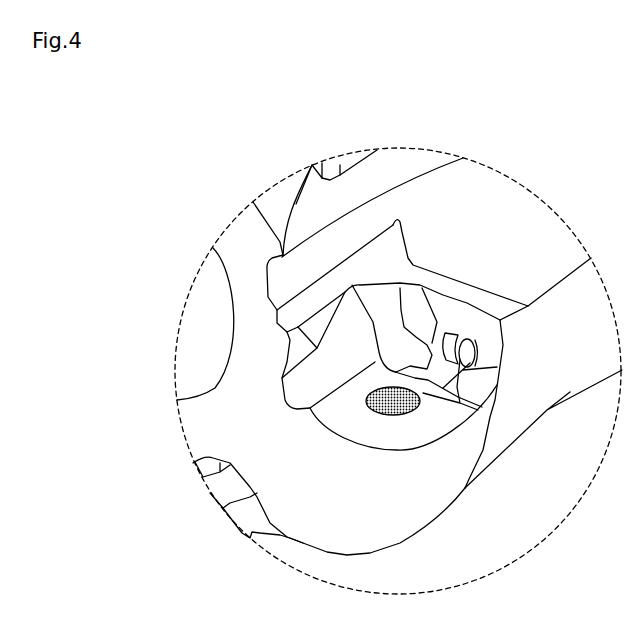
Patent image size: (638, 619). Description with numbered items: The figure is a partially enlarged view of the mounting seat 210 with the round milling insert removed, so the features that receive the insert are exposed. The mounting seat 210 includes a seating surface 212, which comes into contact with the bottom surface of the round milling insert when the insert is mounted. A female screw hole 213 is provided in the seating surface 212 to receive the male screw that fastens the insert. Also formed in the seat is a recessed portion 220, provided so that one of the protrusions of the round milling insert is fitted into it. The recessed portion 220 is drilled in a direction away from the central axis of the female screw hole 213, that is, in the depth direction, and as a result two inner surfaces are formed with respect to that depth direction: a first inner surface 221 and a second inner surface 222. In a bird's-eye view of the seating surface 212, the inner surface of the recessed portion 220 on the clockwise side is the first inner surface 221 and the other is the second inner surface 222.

The mounting seat 210 is at (243, 132).
The seating surface 212 is at (425, 430).
The female screw hole 213 is at (383, 397).
The recessed portion 220 is at (457, 335).
The first inner surface 221 is at (462, 347).
The second inner surface 222 is at (437, 363).